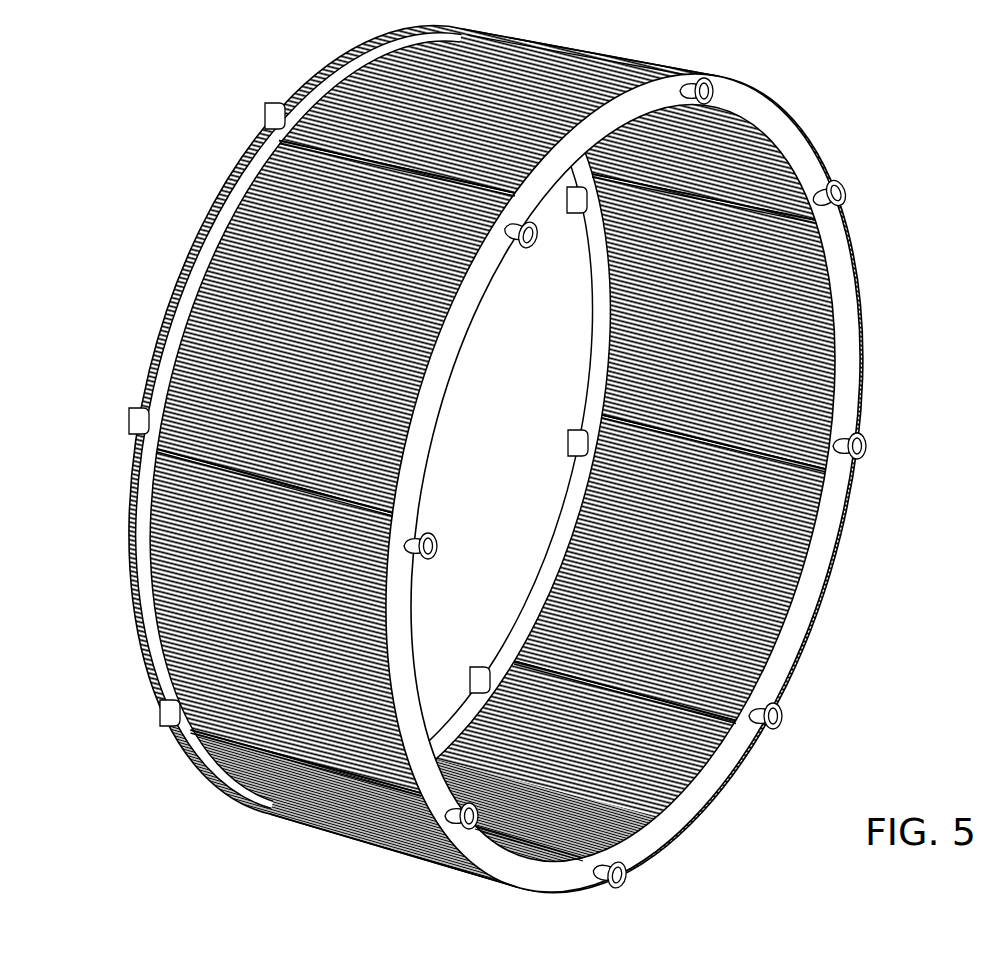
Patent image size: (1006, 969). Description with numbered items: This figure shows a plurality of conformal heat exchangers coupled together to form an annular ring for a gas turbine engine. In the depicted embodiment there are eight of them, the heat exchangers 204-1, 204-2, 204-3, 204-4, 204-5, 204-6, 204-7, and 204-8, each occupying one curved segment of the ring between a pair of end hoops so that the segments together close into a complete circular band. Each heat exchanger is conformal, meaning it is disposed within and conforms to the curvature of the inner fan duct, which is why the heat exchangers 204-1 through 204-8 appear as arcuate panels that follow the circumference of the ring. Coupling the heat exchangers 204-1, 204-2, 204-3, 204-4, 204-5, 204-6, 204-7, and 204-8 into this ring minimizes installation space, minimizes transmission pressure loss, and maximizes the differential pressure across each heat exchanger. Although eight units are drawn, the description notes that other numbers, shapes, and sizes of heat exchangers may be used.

The heat exchanger 204-1 is at (813, 594).
The heat exchanger 204-2 is at (847, 283).
The heat exchanger 204-3 is at (747, 93).
The heat exchanger 204-4 is at (327, 78).
The heat exchanger 204-5 is at (190, 282).
The heat exchanger 204-6 is at (147, 592).
The heat exchanger 204-7 is at (500, 870).
The heat exchanger 204-8 is at (710, 796).